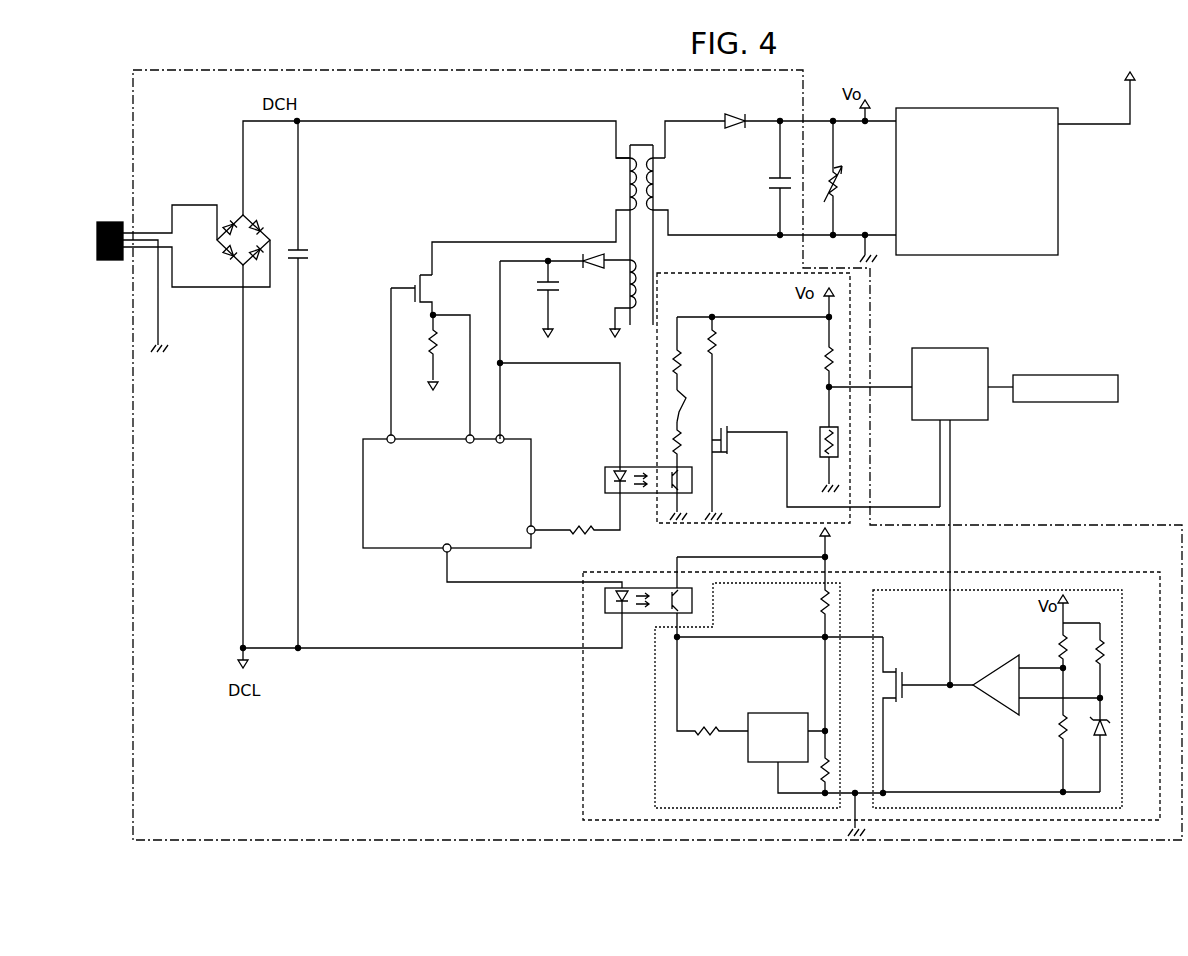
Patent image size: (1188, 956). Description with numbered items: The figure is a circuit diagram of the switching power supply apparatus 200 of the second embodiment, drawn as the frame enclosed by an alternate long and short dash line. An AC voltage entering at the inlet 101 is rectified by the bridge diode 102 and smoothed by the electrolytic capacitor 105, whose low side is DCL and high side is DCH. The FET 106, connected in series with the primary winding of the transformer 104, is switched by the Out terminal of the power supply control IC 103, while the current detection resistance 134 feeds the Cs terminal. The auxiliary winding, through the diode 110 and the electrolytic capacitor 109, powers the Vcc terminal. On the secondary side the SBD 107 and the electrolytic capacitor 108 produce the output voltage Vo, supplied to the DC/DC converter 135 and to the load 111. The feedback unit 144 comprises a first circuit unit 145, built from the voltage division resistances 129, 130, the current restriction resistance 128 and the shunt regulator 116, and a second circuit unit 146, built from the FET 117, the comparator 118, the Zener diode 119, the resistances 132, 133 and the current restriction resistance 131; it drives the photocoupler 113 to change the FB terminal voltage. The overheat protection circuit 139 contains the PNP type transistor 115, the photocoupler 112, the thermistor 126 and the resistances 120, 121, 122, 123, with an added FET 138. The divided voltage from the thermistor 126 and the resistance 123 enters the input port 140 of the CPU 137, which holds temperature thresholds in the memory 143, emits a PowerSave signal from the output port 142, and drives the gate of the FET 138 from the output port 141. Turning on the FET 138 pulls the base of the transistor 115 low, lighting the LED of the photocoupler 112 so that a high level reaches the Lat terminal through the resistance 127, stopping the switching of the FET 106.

The inlet 101 is at (122, 226).
The bridge diode 102 is at (226, 208).
The power supply control IC 103 is at (393, 552).
The transformer 104 is at (632, 140).
The electrolytic capacitor 105 is at (303, 262).
The FET 106 is at (418, 275).
The SBD (Schottky barrier diode) 107 is at (738, 114).
The electrolytic capacitor 108 is at (764, 196).
The electrolytic capacitor 109 is at (540, 290).
The diode 110 is at (598, 270).
The load 111 is at (840, 200).
The photocoupler 112 is at (655, 496).
The photocoupler 113 is at (642, 616).
The PNP type transistor 115 is at (686, 392).
The shunt regulator 116 is at (746, 750).
The FET 117 is at (905, 698).
The comparator 118 is at (1002, 710).
The Zener diode 119 is at (1094, 736).
The resistance 120 is at (714, 372).
The resistance 121 is at (679, 356).
The resistance 122 is at (680, 458).
The resistance 123 is at (826, 362).
The thermistor 126 is at (818, 441).
The resistance 127 is at (580, 524).
The current restriction resistance 128 is at (708, 722).
The voltage division resistance 129 is at (818, 600).
The voltage division resistance 130 is at (815, 776).
The current restriction resistance 131 is at (1096, 652).
The resistance 132 is at (1056, 648).
The resistance 133 is at (1056, 726).
The current detection resistance 134 is at (445, 376).
The DC/DC converter 135 is at (1012, 256).
The CPU 137 is at (986, 421).
The FET 138 is at (732, 452).
The overheat protection circuit 139 is at (712, 273).
The input port 140 is at (870, 374).
The output port 141 is at (923, 463).
The output port 142 is at (1000, 552).
The memory 143 is at (1085, 374).
The feedback unit 144 is at (1052, 571).
The first circuit unit 145 is at (652, 706).
The second circuit unit 146 is at (1124, 690).
The switching power supply apparatus 200 is at (872, 310).